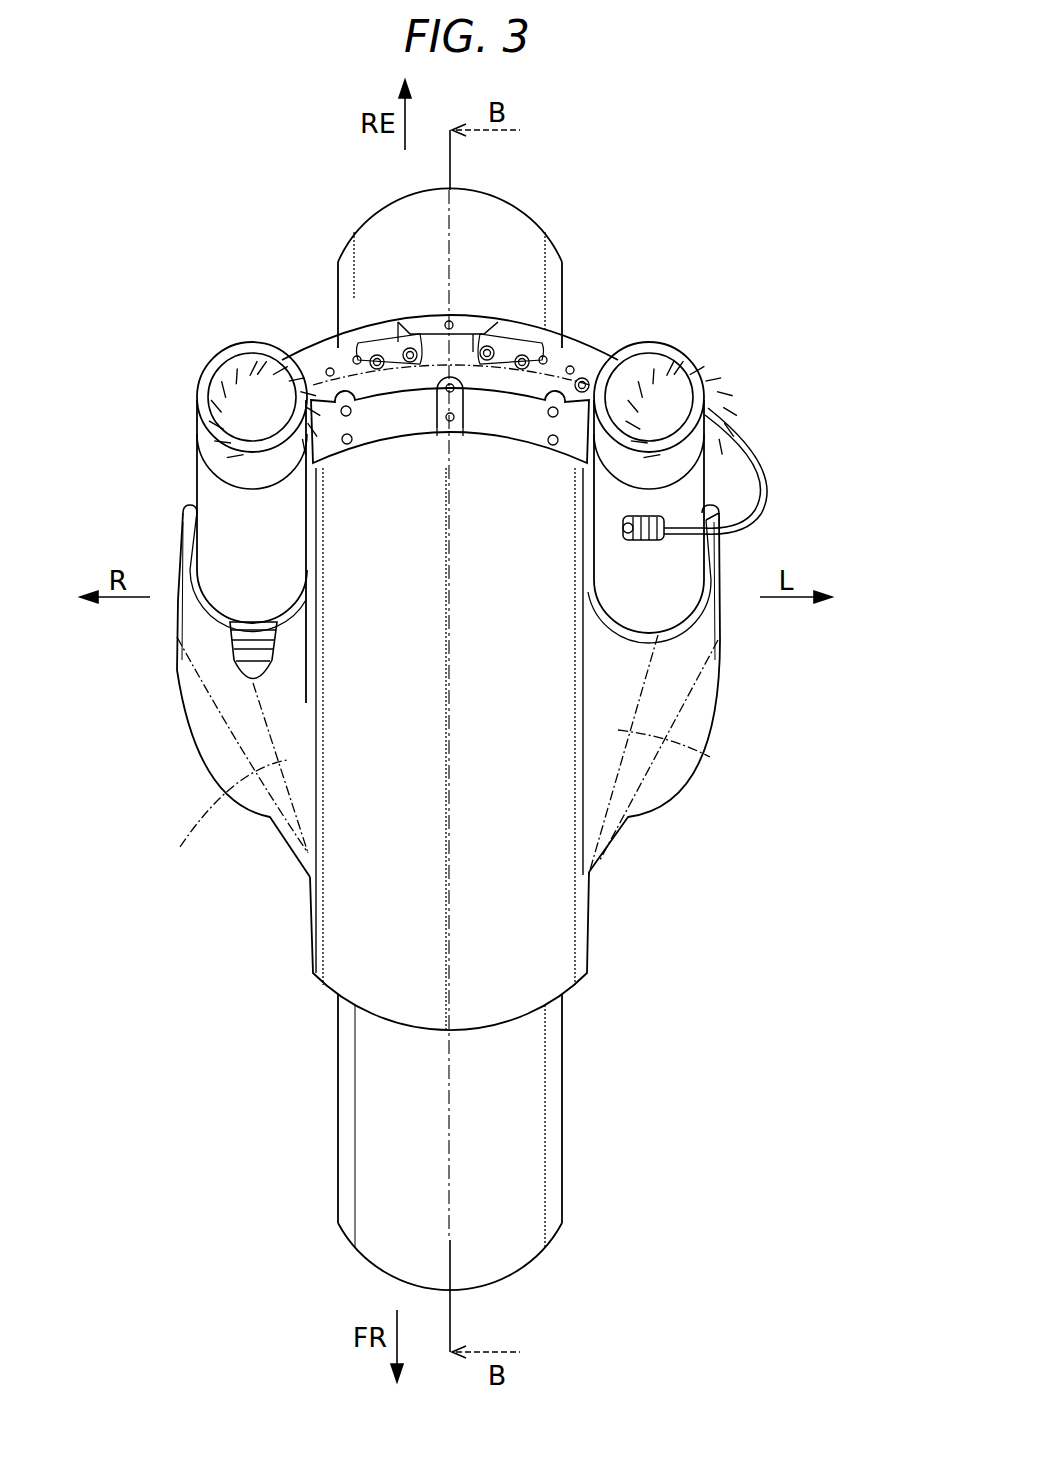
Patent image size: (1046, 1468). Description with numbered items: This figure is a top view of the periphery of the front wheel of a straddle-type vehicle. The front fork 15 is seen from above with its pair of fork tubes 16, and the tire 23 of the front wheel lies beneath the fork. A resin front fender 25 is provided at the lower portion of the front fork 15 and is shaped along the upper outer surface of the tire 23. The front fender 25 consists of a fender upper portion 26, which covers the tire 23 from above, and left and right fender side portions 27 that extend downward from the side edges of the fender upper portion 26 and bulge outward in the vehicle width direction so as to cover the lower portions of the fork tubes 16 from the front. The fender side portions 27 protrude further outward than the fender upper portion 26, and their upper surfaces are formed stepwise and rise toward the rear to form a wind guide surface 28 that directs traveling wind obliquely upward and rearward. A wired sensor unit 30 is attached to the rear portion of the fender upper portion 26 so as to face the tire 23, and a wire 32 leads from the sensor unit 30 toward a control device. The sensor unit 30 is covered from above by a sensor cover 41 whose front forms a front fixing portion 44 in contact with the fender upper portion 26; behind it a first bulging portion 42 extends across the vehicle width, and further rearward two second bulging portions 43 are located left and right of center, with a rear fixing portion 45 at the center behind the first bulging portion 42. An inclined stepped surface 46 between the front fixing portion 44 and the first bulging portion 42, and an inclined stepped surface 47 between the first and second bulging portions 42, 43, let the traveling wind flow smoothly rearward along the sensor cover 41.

The front fork 15 is at (712, 356).
The fork tube 16 is at (218, 498).
The tire 23 is at (562, 246).
The front fender 25 is at (640, 880).
The fender upper portion 26 is at (577, 818).
The fender side portion 27 is at (177, 653).
The wind guide surface 28 is at (181, 846).
The sensor unit 30 is at (410, 302).
The wire 32 is at (770, 497).
The sensor cover 41 is at (448, 309).
The first bulging portion 42 is at (467, 377).
The second bulging portion 43 is at (325, 350).
The front fixing portion 44 is at (450, 451).
The rear fixing portion 45 is at (449, 320).
The stepped surface 46 is at (530, 400).
The stepped surface 47 is at (345, 362).